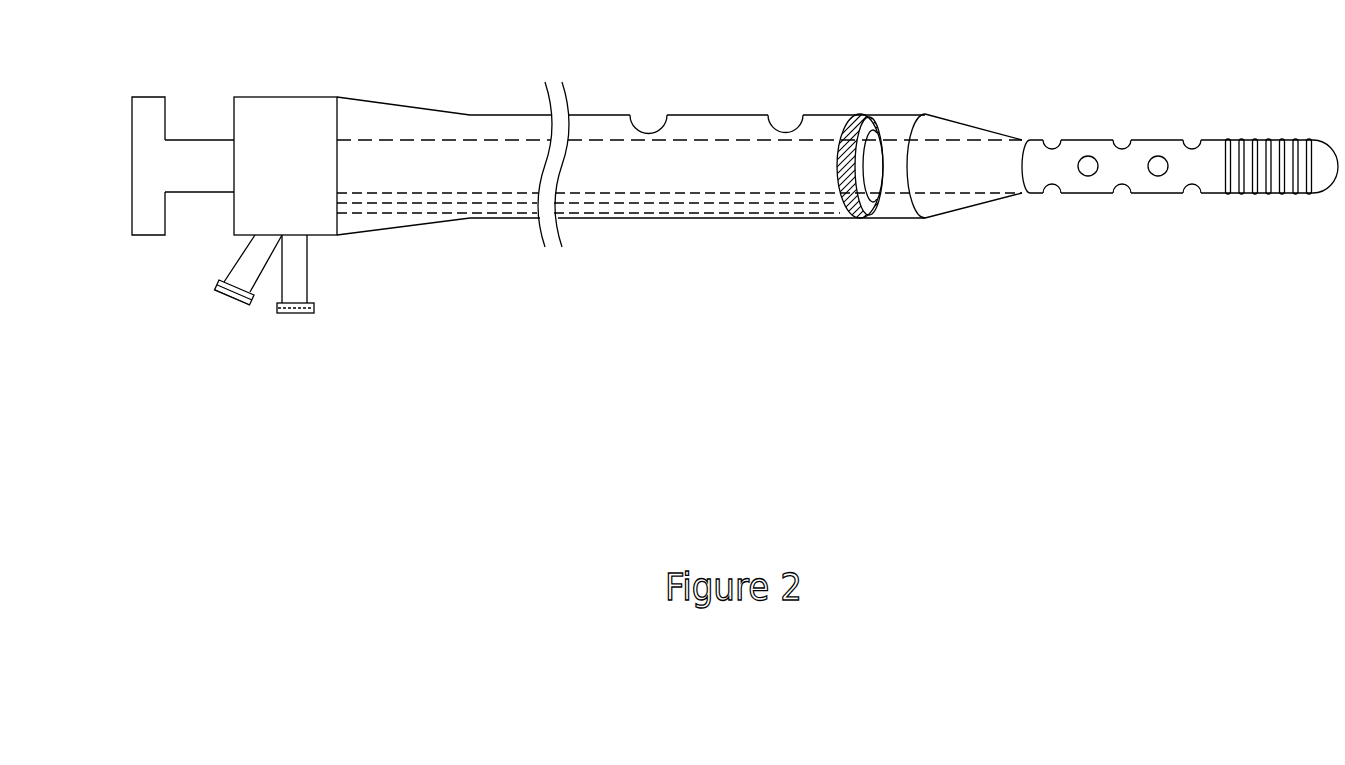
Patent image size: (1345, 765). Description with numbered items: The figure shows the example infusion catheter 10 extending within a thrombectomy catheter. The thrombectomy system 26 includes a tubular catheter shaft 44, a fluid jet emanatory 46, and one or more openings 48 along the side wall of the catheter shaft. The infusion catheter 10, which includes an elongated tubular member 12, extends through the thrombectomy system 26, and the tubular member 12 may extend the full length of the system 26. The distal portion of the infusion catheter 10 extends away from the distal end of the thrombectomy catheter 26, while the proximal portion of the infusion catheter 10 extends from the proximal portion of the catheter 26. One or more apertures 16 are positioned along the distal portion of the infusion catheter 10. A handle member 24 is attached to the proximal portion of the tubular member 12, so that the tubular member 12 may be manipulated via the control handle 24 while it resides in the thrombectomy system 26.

The infusion catheter 10 is at (1156, 108).
The elongated tubular member 12 is at (200, 192).
The apertures 16 is at (1190, 142).
The handle member 24 is at (149, 97).
The thrombectomy system 26 is at (406, 102).
The tubular catheter shaft 44 is at (812, 157).
The fluid jet emanatory 46 is at (858, 210).
The openings 48 is at (648, 110).